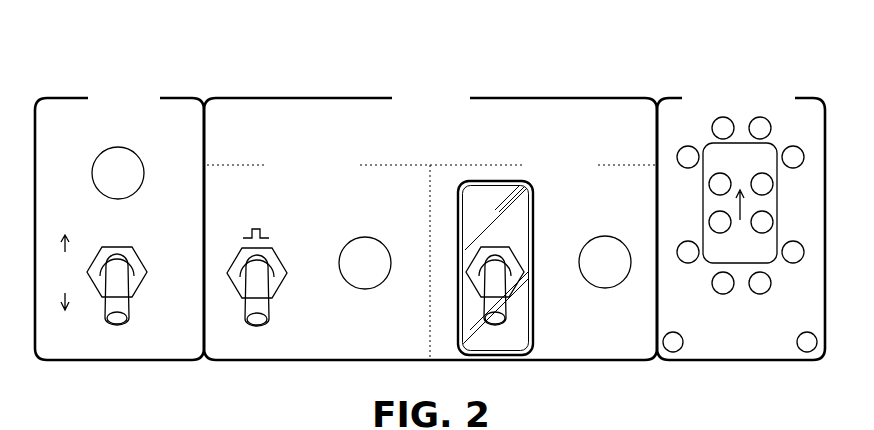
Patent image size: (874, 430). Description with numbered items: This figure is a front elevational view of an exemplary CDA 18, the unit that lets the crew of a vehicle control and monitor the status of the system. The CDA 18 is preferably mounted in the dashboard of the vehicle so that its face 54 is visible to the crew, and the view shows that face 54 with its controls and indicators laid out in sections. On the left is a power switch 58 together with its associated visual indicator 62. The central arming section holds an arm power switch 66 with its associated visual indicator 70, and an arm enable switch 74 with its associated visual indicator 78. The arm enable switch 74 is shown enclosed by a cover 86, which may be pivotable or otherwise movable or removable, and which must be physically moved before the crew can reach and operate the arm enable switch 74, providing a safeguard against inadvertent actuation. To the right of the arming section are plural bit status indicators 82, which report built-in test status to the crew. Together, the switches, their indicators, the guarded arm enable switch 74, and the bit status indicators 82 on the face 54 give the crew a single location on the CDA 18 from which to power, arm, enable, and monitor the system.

The CDA 18 is at (566, 70).
The face 54 is at (237, 112).
The power switch 58 is at (108, 293).
The visual indicator 62 is at (101, 173).
The arm power switch 66 is at (269, 309).
The visual indicator 70 is at (365, 276).
The arm enable switch 74 is at (509, 236).
The visual indicator 78 is at (605, 275).
The bit status indicators 82 is at (759, 70).
The cover 86 is at (510, 356).